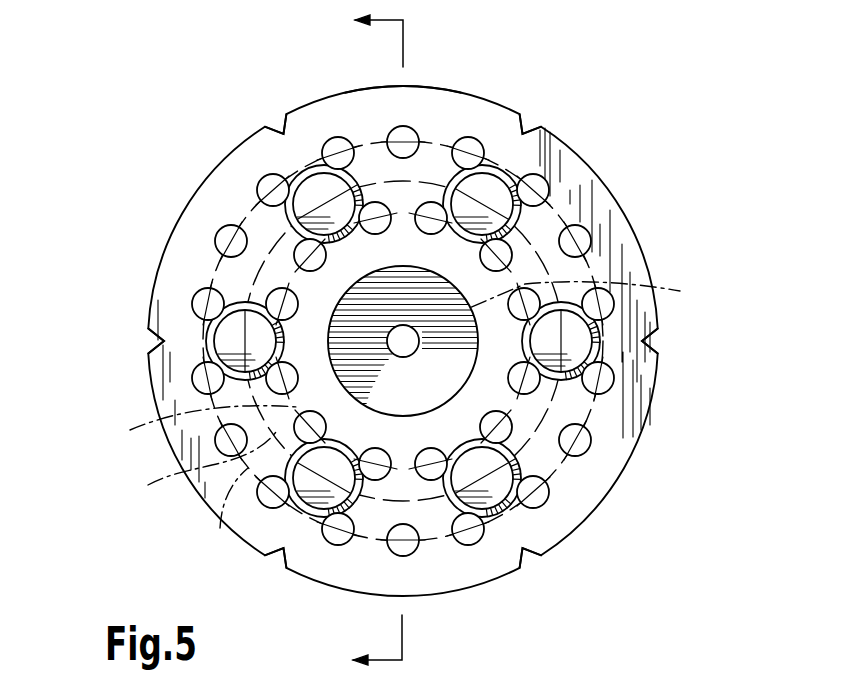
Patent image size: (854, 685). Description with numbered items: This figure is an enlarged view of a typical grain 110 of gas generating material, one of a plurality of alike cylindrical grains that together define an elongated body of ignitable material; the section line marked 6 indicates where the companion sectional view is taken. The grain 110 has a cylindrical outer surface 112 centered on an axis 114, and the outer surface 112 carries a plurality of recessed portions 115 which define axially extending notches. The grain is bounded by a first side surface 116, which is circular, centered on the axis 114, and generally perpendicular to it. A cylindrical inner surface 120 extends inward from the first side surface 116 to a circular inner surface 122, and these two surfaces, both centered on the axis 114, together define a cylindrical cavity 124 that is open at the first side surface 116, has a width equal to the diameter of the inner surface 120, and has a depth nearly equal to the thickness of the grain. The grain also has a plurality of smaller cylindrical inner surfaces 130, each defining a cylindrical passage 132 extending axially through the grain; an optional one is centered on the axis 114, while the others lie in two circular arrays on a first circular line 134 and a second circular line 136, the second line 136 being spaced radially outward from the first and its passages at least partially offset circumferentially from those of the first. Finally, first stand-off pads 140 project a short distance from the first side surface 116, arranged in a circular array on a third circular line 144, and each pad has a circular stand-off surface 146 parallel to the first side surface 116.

The section line 6- 6 is at (368, 340).
The grain 110 is at (140, 105).
The cylindrical outer surface 112 is at (352, 88).
The axis 114 is at (571, 297).
The recessed portions 115 is at (281, 128).
The first side surface 116 is at (232, 181).
The cylindrical inner surface 120 is at (490, 405).
The circular inner surface 122 is at (474, 361).
The cylindrical cavity 124 is at (428, 398).
The smaller cylindrical inner surfaces 130 is at (200, 303).
The cylindrical passage 132 is at (225, 225).
The first circular line 134 is at (130, 430).
The second circular line 136 is at (216, 530).
The first stand-off pads 140 is at (513, 157).
The third circular line 144 is at (148, 484).
The circular stand-off surface 146 is at (520, 176).